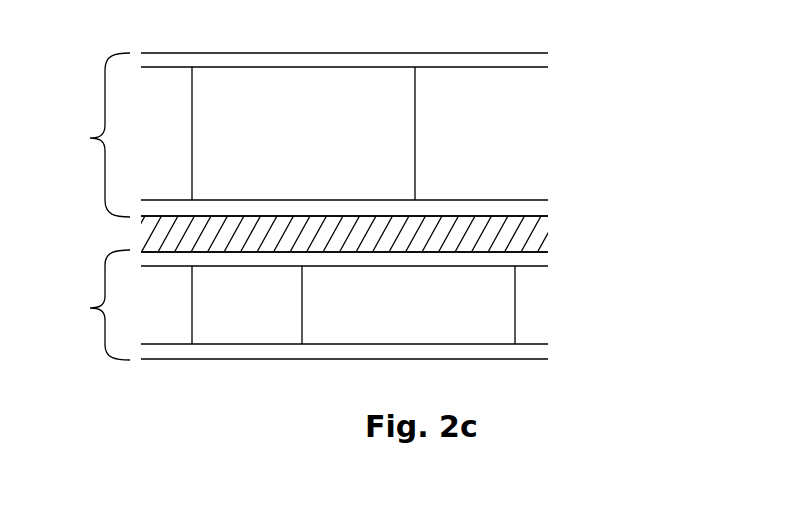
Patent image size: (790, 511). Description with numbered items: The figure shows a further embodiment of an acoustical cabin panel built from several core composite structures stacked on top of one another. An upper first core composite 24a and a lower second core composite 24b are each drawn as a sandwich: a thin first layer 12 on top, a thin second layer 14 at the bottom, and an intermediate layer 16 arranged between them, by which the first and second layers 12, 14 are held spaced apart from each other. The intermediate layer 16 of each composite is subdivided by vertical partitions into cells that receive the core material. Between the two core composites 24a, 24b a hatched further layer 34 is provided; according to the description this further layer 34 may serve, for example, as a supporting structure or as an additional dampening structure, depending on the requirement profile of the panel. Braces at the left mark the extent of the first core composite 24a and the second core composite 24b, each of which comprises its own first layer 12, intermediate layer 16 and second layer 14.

The first layer 12 is at (543, 60).
The second layer 14 is at (567, 200).
The intermediate layer 16 is at (528, 113).
The further layer 34 is at (545, 225).
The first core composite 24a is at (84, 135).
The second core composite 24b is at (84, 305).